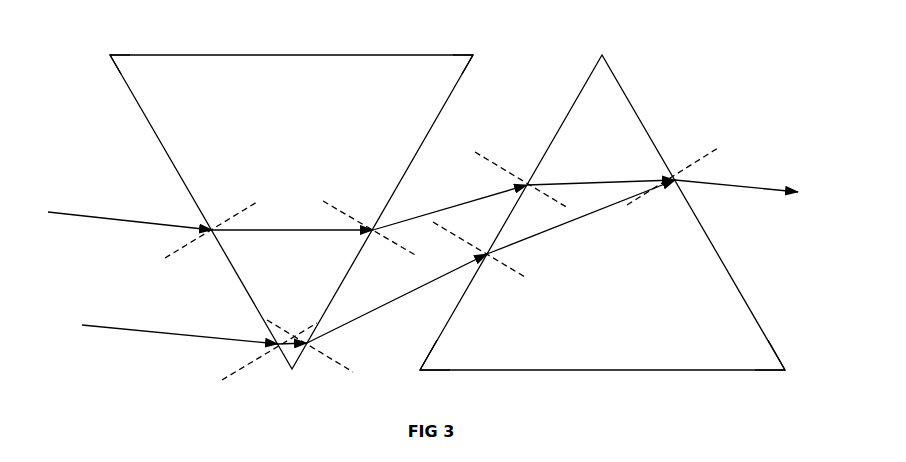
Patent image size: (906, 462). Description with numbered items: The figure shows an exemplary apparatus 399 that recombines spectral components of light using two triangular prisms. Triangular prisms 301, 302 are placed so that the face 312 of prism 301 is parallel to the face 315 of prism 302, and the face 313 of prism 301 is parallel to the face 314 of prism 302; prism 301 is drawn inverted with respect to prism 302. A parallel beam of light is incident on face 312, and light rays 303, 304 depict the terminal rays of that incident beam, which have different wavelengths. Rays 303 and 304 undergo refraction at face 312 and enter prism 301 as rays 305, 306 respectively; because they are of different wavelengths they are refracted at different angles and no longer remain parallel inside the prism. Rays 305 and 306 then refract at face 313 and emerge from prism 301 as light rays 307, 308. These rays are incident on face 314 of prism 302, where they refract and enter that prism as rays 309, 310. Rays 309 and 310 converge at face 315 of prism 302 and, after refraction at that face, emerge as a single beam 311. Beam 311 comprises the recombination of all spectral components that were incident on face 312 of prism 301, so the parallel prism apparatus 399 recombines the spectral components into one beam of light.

The triangular prism 301 is at (298, 95).
The triangular prism 302 is at (602, 93).
The light ray 303 is at (127, 209).
The light ray 304 is at (180, 323).
The light ray 305 is at (292, 217).
The light ray 306 is at (290, 325).
The light ray 307 is at (450, 206).
The light ray 308 is at (397, 298).
The light ray 309 is at (601, 169).
The light ray 310 is at (581, 217).
The light beam 311 is at (736, 175).
The face 312 is at (122, 78).
The face 313 is at (463, 74).
The face 314 is at (435, 338).
The face 315 is at (770, 340).
The apparatus 399 is at (697, 68).